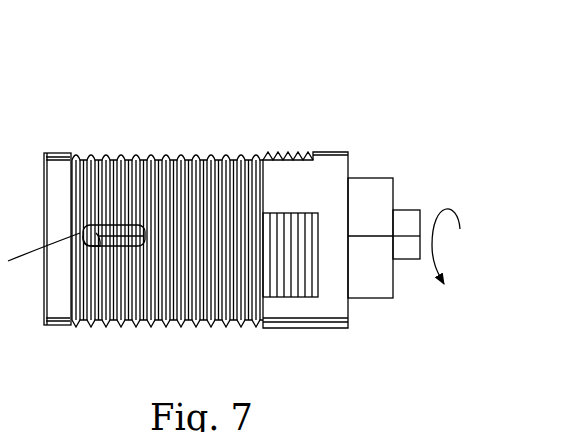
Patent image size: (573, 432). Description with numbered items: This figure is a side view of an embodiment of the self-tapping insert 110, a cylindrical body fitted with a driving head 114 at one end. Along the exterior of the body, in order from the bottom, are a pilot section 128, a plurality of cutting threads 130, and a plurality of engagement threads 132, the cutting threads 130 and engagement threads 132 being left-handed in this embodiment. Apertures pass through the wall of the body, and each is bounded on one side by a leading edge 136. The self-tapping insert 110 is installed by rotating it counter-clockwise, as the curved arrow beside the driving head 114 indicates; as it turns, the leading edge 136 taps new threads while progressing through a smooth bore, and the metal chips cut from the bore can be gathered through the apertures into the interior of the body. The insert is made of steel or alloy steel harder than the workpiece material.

The self-tapping insert 110 is at (152, 95).
The driving head 114 is at (362, 156).
The pilot section 128 is at (60, 326).
The cutting threads 130 is at (200, 342).
The engagement threads 132 is at (300, 146).
The leading edge 136 is at (110, 228).